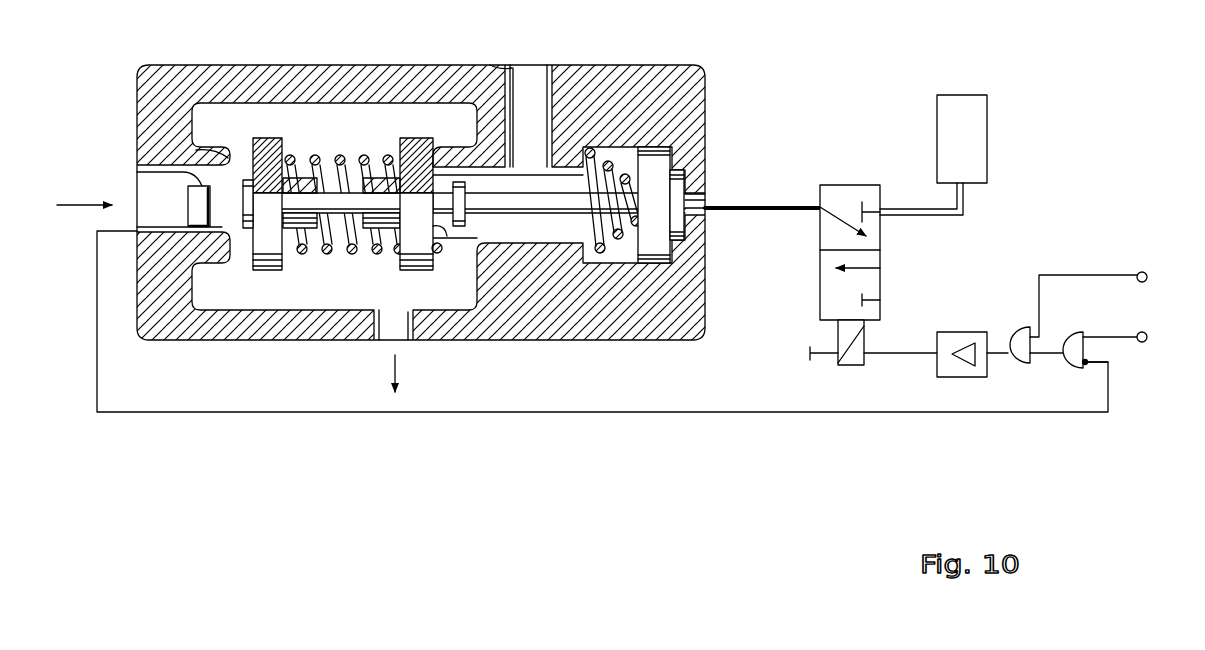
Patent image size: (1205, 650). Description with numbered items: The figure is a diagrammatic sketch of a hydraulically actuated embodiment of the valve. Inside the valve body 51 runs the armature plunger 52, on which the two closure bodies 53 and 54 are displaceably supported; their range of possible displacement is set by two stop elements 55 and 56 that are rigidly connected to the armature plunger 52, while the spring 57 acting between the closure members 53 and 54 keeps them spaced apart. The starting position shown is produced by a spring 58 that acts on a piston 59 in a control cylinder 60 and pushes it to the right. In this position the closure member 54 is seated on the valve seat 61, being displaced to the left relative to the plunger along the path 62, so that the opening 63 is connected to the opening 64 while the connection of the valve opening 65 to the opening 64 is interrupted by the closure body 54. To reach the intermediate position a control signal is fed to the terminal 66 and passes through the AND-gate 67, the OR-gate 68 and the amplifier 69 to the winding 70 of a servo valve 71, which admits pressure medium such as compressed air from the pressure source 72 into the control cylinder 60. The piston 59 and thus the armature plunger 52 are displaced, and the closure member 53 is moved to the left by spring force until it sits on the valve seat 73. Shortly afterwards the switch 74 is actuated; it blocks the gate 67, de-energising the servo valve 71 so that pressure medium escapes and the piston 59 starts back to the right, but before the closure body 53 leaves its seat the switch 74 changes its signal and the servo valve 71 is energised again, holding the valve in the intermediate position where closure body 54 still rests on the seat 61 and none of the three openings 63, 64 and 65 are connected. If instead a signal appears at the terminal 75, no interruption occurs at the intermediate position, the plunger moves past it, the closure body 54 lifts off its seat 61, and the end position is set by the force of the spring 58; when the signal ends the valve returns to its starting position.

The valve body 51 is at (150, 106).
The armature plunger 52 is at (528, 202).
The closure body 53 is at (270, 140).
The closure body 54 is at (410, 152).
The stop element 55 is at (248, 181).
The stop element 56 is at (460, 184).
The spring 57 is at (333, 252).
The spring 58 is at (617, 238).
The piston 59 is at (680, 260).
The control cylinder 60 is at (631, 156).
The valve seat 61 is at (442, 230).
The path 62 is at (440, 228).
The opening 63 is at (150, 214).
The opening 64 is at (388, 330).
The valve opening 65 is at (531, 92).
The terminal 66 is at (1142, 342).
The AND-gate 67 is at (1076, 366).
The OR-gate 68 is at (1018, 362).
The amplifier 69 is at (958, 378).
The winding 70 is at (852, 367).
The servo valve 71 is at (809, 256).
The pressure source 72 is at (957, 108).
The valve seat 73 is at (216, 156).
The switch 74 is at (196, 197).
The terminal 75 is at (1142, 272).